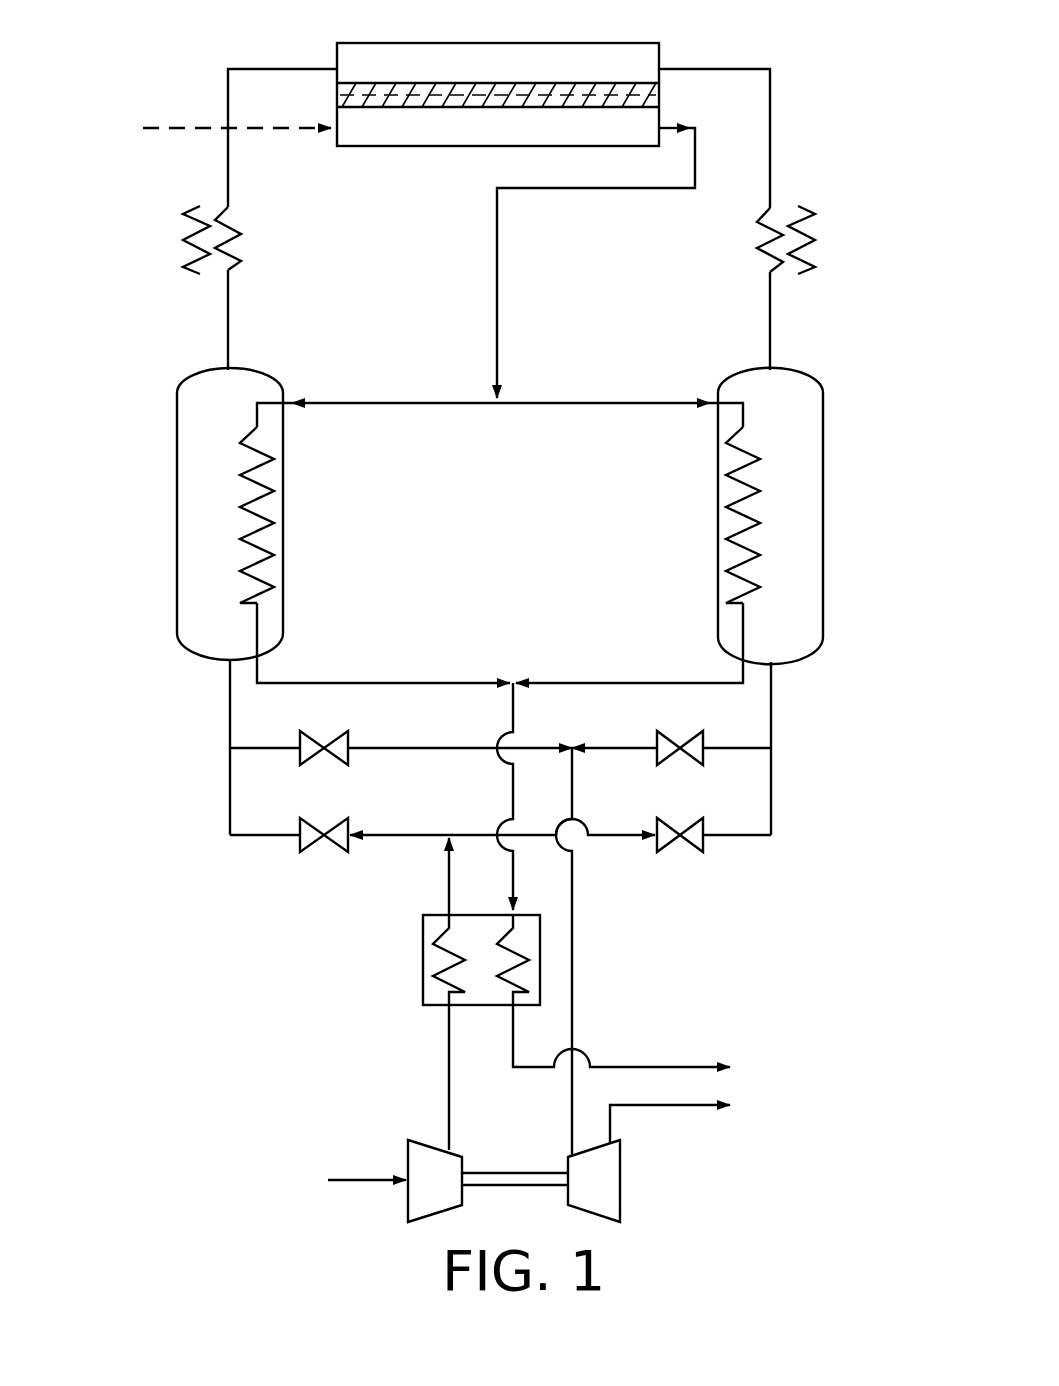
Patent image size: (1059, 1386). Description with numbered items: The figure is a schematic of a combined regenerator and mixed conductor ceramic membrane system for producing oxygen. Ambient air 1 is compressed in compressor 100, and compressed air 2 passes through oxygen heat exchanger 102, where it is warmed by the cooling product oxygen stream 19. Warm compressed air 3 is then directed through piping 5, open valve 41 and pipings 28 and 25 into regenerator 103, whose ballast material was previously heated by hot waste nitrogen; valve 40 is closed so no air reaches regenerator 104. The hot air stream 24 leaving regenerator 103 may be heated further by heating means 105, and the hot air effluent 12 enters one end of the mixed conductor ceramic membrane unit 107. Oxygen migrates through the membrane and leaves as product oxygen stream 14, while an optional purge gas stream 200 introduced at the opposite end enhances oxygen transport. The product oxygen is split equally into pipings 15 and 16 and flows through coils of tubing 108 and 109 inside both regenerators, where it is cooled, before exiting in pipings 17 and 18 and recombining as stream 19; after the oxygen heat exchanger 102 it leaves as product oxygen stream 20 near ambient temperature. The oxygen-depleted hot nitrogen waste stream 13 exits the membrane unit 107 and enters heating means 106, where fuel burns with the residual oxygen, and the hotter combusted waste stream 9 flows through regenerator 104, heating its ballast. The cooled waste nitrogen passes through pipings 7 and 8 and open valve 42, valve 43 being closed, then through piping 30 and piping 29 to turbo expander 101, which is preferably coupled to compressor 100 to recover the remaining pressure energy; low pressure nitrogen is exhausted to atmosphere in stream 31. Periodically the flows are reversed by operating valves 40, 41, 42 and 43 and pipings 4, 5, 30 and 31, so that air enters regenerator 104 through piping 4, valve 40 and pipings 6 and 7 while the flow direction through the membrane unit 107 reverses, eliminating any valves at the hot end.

The ambient air 1 is at (354, 1185).
The compressed air 2 is at (449, 1103).
The warm compressed air 3 is at (449, 890).
The piping 4 is at (398, 835).
The piping 5 is at (613, 835).
The piping 6 is at (230, 795).
The piping 7 is at (230, 688).
The piping 8 is at (270, 748).
The combusted waste stream 9 is at (228, 345).
The hot air effluent 12 is at (770, 100).
The hot nitrogen waste stream 13 is at (228, 80).
The product oxygen stream 14 is at (497, 228).
The piping 15 is at (385, 403).
The piping 16 is at (655, 403).
The piping 17 is at (392, 683).
The piping 18 is at (600, 683).
The product oxygen stream 19 is at (513, 875).
The product oxygen stream 20 is at (652, 1067).
The hot air stream 24 is at (770, 335).
The piping 25 is at (771, 700).
The piping 28 is at (771, 800).
The piping 29 is at (572, 970).
The piping 30 is at (403, 748).
The piping / exhaust stream 31 is at (613, 748).
The valve 40 is at (326, 847).
The valve 41 is at (686, 847).
The valve 42 is at (324, 760).
The valve 43 is at (682, 760).
The compressor 100 is at (408, 1148).
The turbo expander 101 is at (620, 1186).
The oxygen heat exchanger 102 is at (423, 967).
The regenerator 103 is at (823, 490).
The regenerator 104 is at (177, 505).
The heating means 105 is at (812, 240).
The heating means 106 is at (183, 240).
The mixed conductor ceramic membrane unit 107 is at (659, 43).
The coils of tubing 108 is at (272, 475).
The coils of tubing 109 is at (728, 480).
The purge gas stream 200 is at (158, 127).